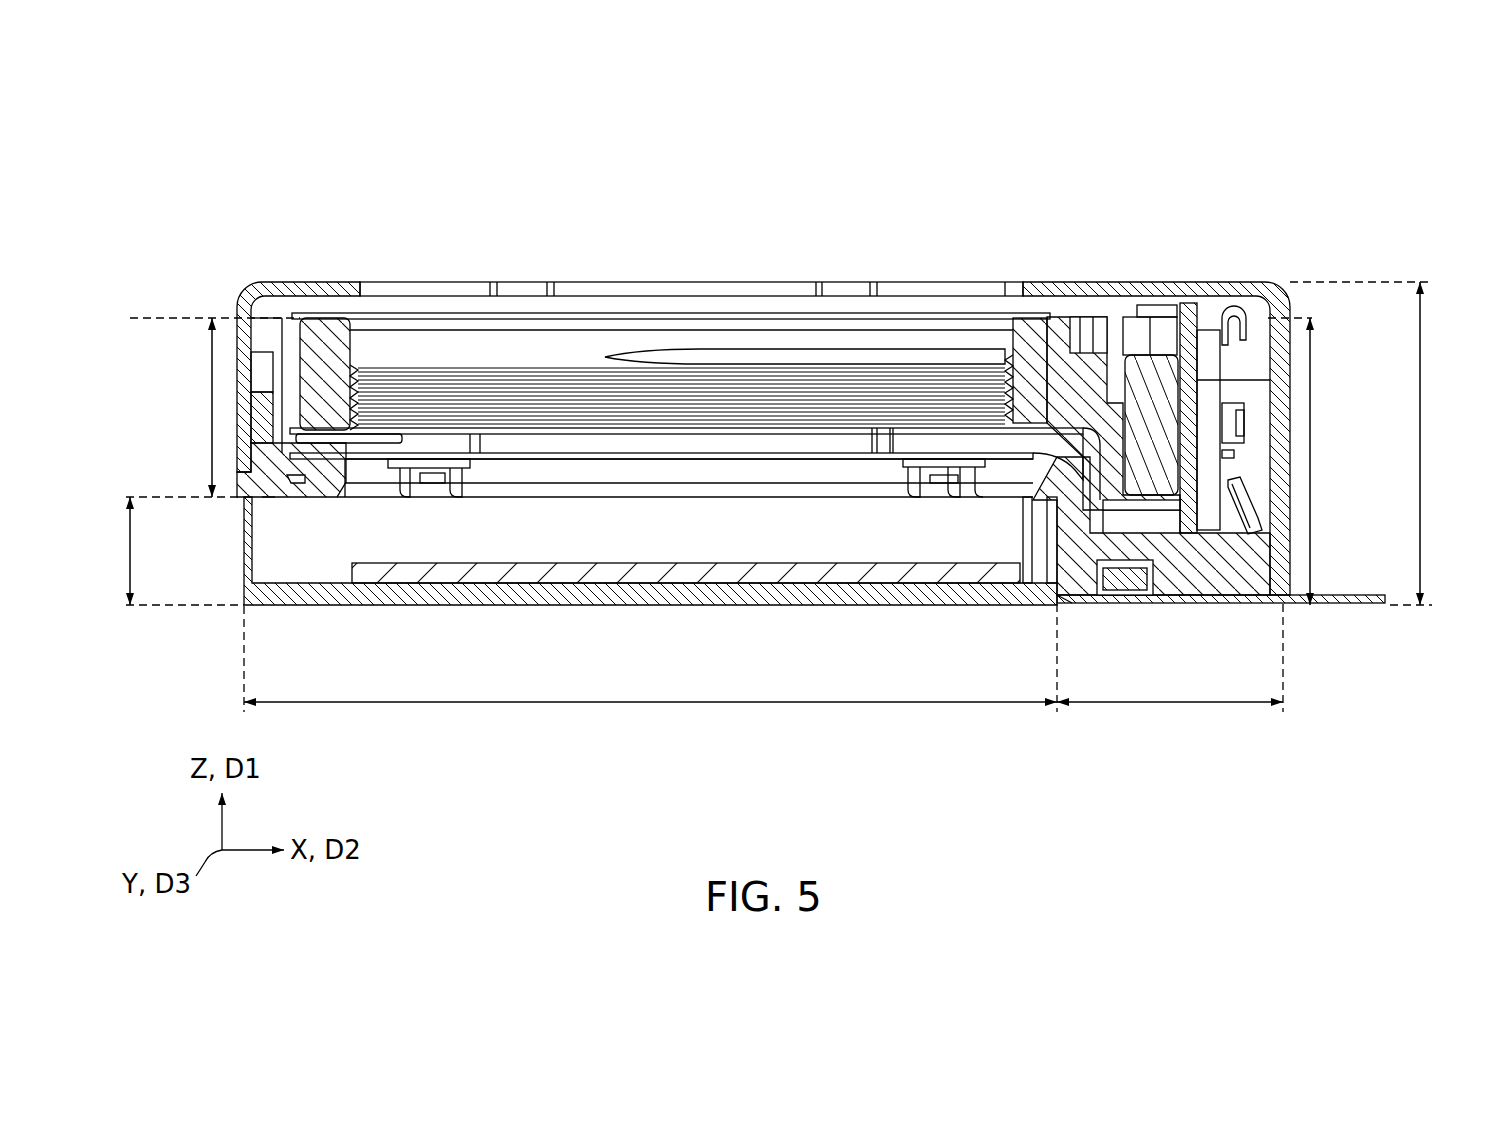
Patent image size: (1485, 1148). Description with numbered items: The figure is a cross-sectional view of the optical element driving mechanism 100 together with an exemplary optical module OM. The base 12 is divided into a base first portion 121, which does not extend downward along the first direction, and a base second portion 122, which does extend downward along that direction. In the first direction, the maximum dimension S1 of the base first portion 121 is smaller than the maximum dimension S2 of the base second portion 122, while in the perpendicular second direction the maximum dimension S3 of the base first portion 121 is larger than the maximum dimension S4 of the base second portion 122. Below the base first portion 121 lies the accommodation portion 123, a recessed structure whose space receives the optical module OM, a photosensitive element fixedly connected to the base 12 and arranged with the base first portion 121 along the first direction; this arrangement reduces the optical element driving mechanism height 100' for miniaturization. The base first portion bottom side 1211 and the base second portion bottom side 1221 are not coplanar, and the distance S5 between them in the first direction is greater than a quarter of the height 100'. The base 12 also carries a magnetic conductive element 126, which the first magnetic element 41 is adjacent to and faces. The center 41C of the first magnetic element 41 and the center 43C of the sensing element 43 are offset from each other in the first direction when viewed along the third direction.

The optical element driving mechanism 100 is at (734, 389).
The optical element driving mechanism height 100' is at (1455, 443).
The base 12 is at (1368, 95).
The base first portion 121 is at (200, 478).
The base first portion bottom side 1211 is at (275, 498).
The base second portion 122 is at (1318, 566).
The base second portion bottom side 1221 is at (1070, 604).
The accommodation portion 123 is at (290, 537).
The magnetic conductive element 126 is at (1188, 340).
The first magnetic element 41 is at (1135, 372).
The center of the first magnetic element 41C is at (1148, 424).
The sensing element 43 is at (1150, 594).
The center of the sensing element 43C is at (1125, 584).
The optical module OM is at (520, 574).
The maximum dimension of the base first portion S1 is at (196, 409).
The maximum dimension of the base second portion S2 is at (1330, 461).
The maximum dimension of the base first portion in the second direction S3 is at (633, 686).
The maximum dimension of the base second portion in the second direction S4 is at (1154, 686).
The distance between the bottom sides S5 is at (113, 551).